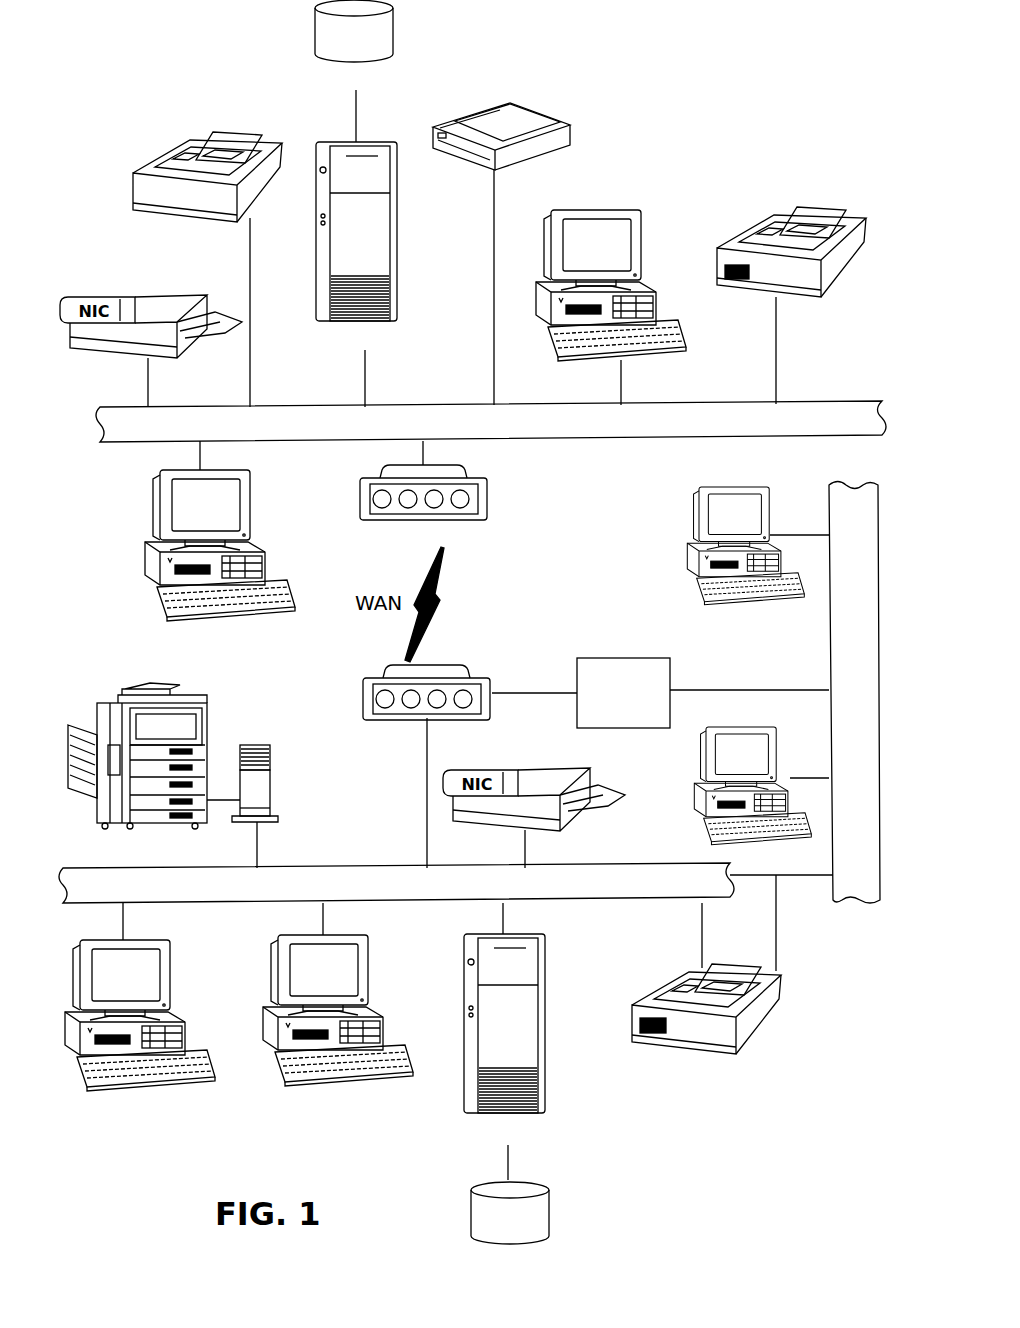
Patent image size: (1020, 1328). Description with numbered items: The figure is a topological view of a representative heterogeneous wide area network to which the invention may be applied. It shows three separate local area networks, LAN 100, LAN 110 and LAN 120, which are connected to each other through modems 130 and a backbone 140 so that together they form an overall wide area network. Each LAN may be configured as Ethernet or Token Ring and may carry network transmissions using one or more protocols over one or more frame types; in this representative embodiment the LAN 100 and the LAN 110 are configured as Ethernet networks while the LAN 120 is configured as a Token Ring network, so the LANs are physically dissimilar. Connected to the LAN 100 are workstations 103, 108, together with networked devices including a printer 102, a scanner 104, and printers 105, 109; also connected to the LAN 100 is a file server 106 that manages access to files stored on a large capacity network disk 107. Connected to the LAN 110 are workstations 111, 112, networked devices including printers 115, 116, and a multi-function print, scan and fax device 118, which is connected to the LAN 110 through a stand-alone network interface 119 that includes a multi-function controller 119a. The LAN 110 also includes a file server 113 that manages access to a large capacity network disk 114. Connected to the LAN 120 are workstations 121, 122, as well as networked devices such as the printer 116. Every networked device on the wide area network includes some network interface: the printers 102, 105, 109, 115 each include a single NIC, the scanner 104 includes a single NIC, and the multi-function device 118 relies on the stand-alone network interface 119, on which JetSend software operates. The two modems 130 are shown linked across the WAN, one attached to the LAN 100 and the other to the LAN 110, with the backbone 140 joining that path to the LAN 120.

The local area network 100 is at (392, 408).
The printer 102 is at (120, 295).
The workstation 103 is at (158, 522).
The scanner 104 is at (572, 118).
The printer 105 is at (195, 145).
The file server 106 is at (397, 226).
The network disk 107 is at (312, 38).
The workstation 108 is at (644, 256).
The printer 109 is at (790, 210).
The local area network 110 is at (383, 868).
The workstation 111 is at (138, 1083).
The workstation 112 is at (307, 1083).
The file server 113 is at (464, 1010).
The network disk 114 is at (471, 1212).
The printer 115 is at (593, 783).
The printer 116 is at (752, 1040).
The multi-function device 118 is at (148, 826).
The network interface 119 is at (252, 745).
The multi-function controller 119a is at (271, 788).
The local area network 120 is at (829, 645).
The workstation 121 is at (722, 487).
The workstation 122 is at (697, 790).
The modem 130 is at (487, 493).
The backbone 140 is at (613, 658).